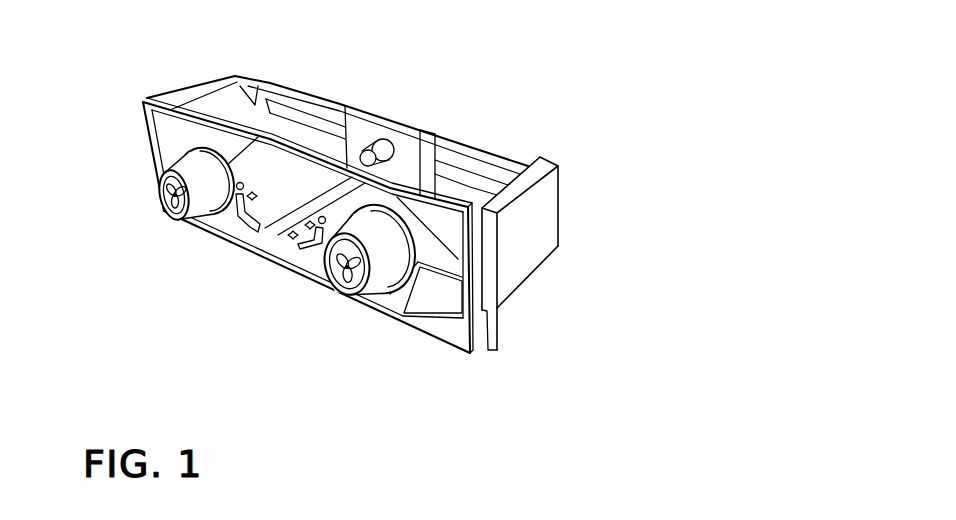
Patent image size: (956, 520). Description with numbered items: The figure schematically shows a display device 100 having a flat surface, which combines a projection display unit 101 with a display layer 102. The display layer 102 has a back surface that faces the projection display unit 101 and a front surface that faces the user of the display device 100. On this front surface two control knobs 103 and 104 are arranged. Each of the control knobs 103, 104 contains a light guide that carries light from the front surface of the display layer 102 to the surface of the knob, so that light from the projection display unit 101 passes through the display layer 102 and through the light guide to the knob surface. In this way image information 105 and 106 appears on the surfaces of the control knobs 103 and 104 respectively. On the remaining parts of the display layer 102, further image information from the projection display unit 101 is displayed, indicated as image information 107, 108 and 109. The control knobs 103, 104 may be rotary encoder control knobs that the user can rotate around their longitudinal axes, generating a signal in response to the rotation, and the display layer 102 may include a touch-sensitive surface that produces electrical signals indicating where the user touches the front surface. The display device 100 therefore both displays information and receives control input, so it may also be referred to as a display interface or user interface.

The display device 100 is at (451, 107).
The projection display unit 101 is at (365, 152).
The display layer 102 is at (471, 322).
The control knob 103 is at (383, 278).
The control knob 104 is at (192, 170).
The image information 105 is at (348, 284).
The image information 106 is at (176, 210).
The image information 107 is at (250, 215).
The image information 108 is at (310, 247).
The image information 109 is at (460, 263).